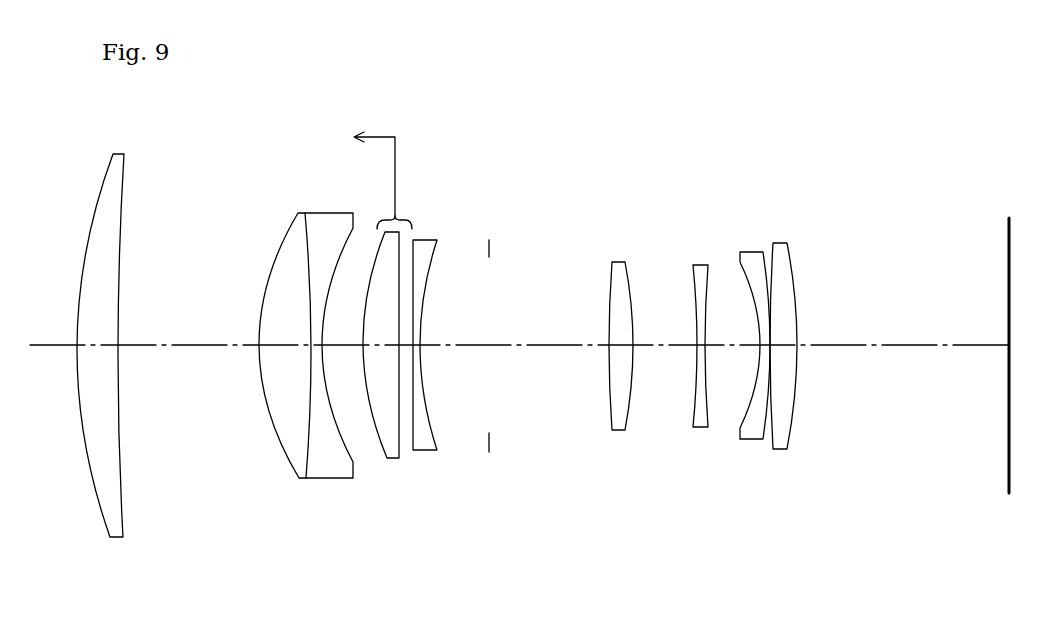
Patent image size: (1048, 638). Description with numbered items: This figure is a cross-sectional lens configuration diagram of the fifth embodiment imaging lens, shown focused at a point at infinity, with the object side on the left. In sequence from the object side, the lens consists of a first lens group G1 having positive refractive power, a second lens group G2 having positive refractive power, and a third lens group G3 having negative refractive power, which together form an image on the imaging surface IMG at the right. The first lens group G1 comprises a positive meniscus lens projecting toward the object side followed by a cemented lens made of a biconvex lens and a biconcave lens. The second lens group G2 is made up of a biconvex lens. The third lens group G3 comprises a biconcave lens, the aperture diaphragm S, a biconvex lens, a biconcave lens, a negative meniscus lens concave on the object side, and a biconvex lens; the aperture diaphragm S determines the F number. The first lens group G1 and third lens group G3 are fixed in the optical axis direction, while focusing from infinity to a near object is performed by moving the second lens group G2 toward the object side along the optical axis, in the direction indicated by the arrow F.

The first lens group G1 is at (358, 538).
The second lens group G2 is at (370, 462).
The third lens group G3 is at (797, 460).
The aperture diaphragm S is at (490, 248).
The direction of focusing F is at (383, 165).
The imaging surface IMG is at (1009, 447).